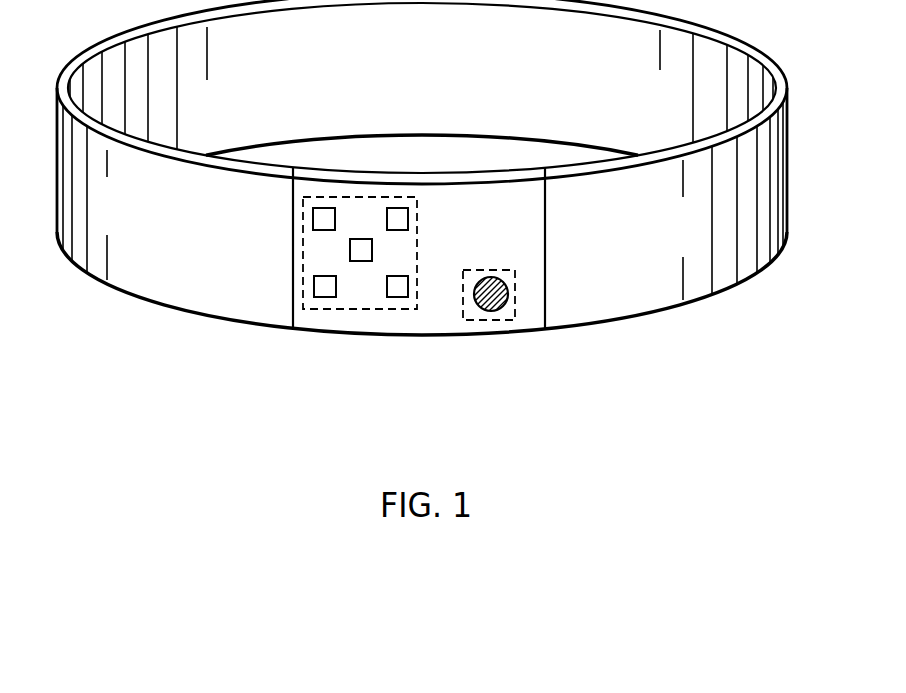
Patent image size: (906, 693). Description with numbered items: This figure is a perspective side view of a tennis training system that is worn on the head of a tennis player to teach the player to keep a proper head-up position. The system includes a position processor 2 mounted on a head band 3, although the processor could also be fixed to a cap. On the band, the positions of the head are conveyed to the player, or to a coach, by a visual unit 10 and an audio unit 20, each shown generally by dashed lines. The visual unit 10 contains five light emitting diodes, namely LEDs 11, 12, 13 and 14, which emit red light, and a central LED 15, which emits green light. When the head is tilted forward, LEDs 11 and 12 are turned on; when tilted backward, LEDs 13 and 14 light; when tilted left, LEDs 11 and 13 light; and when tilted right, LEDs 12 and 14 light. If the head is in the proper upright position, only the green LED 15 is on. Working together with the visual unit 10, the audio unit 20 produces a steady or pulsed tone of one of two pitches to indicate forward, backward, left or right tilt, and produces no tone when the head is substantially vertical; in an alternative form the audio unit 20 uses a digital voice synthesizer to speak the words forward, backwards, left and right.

The position processor 2 is at (556, 263).
The head band 3 is at (787, 187).
The visual unit 10 is at (358, 310).
The light emitting diode 11 is at (398, 208).
The light emitting diode 12 is at (398, 297).
The light emitting diode 13 is at (320, 208).
The light emitting diode 14 is at (314, 287).
The light emitting diode 15 is at (358, 239).
The audio unit 20 is at (477, 271).